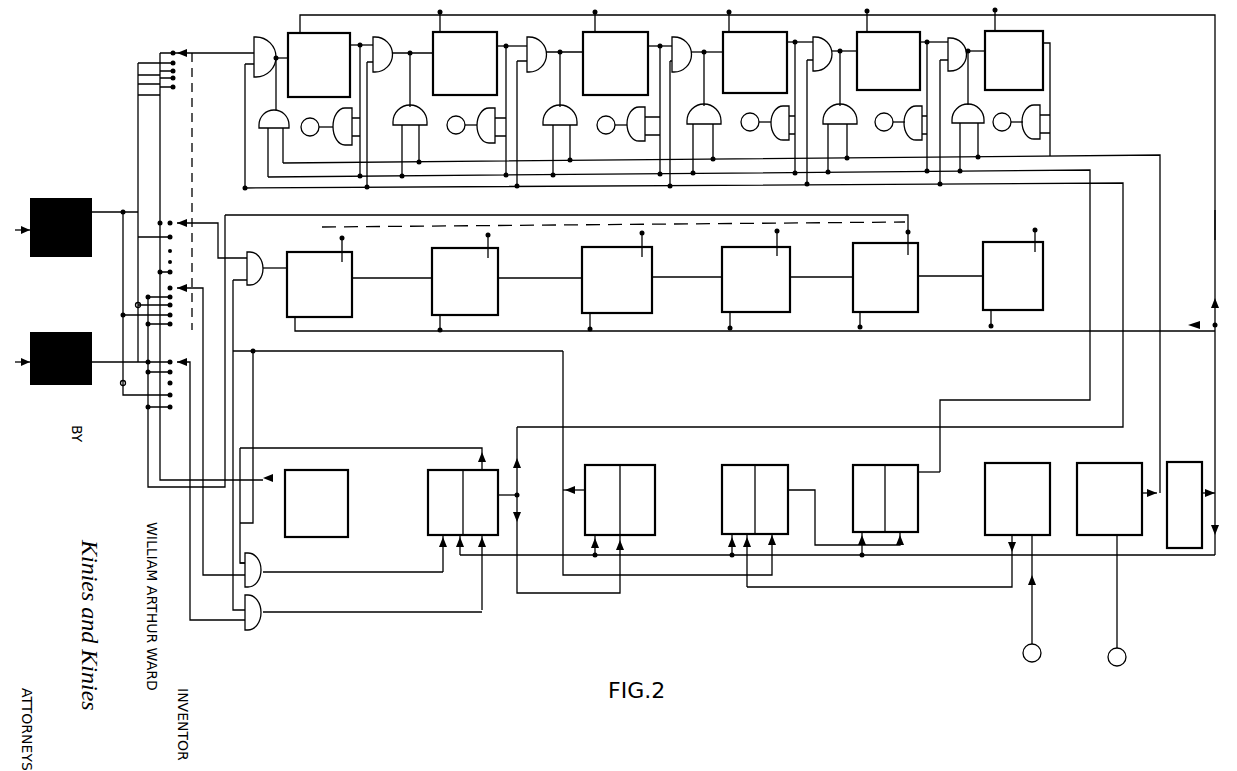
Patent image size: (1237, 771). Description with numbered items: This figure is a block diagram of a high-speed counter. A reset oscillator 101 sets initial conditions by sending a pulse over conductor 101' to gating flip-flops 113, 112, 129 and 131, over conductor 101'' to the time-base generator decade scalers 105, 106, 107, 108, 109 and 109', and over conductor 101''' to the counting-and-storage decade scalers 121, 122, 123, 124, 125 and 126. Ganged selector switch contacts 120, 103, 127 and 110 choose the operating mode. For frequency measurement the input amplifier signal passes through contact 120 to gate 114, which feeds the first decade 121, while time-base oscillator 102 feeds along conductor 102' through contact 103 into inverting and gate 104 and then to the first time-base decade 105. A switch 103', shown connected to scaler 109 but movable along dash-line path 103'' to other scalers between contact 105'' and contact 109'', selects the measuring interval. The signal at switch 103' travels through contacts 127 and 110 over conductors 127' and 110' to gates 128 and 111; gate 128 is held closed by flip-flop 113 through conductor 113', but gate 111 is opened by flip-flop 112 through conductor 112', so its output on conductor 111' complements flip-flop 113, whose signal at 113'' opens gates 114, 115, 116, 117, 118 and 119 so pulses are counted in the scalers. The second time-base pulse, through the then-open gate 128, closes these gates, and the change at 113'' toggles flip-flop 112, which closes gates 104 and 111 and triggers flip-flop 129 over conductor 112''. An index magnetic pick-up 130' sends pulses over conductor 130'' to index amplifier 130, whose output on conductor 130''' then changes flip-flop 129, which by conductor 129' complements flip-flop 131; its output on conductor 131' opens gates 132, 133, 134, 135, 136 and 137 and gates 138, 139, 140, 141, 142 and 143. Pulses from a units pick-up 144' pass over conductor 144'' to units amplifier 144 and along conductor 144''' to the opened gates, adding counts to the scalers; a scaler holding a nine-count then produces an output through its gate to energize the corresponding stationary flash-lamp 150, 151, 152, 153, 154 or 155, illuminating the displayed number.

The switch contact 120 is at (208, 50).
The inverting and gate 114 is at (262, 42).
The inverting and gate 115 is at (389, 44).
The inverting and gate 116 is at (533, 44).
The inverting and gate 117 is at (684, 44).
The inverting and gate 118 is at (826, 43).
The inverting and gate 119 is at (956, 43).
The counting-and-storage decade scaler 121 is at (330, 106).
The counting-and-storage decade scaler 122 is at (480, 105).
The counting-and-storage decade scaler 123 is at (627, 104).
The counting-and-storage decade scaler 124 is at (768, 104).
The counting-and-storage decade scaler 125 is at (902, 103).
The counting-and-storage decade scaler 126 is at (1017, 93).
The gate 132 is at (256, 118).
The gate 133 is at (406, 112).
The gate 134 is at (556, 112).
The gate 135 is at (698, 111).
The gate 136 is at (834, 111).
The gate 137 is at (968, 110).
The gate 138 is at (340, 133).
The gate 139 is at (488, 132).
The gate 140 is at (640, 132).
The gate 141 is at (775, 131).
The gate 142 is at (902, 131).
The gate 143 is at (1030, 131).
The stationary flash-lamp 150 is at (320, 112).
The stationary flash-lamp 151 is at (466, 114).
The stationary flash-lamp 152 is at (614, 114).
The stationary flash-lamp 153 is at (758, 114).
The stationary flash-lamp 154 is at (893, 113).
The stationary flash-lamp 155 is at (1010, 110).
The flip-flop output signal 113'' is at (478, 322).
The dash-line path 103'' is at (672, 201).
The conductor 101''' is at (1191, 224).
The conductor 101'' is at (1191, 313).
The switch contact 103 is at (524, 342).
The switch 103' is at (928, 237).
The inverting and gate 104 is at (398, 421).
The time-base generator decade scaler 105 is at (751, 291).
The contact 105'' is at (365, 247).
The time-base generator decade scaler 106 is at (507, 283).
The time-base generator decade scaler 107 is at (652, 281).
The time-base generator decade scaler 108 is at (787, 280).
The time-base generator decade scaler 109 is at (918, 286).
The time-base generator decade scaler 109' is at (1013, 285).
The contact 109'' is at (1059, 239).
The switch contact 127 is at (183, 421).
The conductor 127' is at (220, 530).
The switch contact 110 is at (196, 480).
The conductor 110' is at (208, 633).
The time-base oscillator 102 is at (316, 503).
The conductor 102' is at (176, 466).
The gating flip-flop 112 is at (609, 500).
The conductor 112' is at (572, 463).
The conductor 112'' is at (689, 595).
The gating flip-flop 113 is at (803, 518).
The conductor 113' is at (363, 457).
The gating flip-flop 129 is at (755, 514).
The conductor 129' is at (846, 506).
The gating flip-flop 131 is at (896, 500).
The conductor 131' is at (1062, 373).
The index amplifier 130 is at (898, 541).
The index magnetic pick-up 130' is at (1054, 661).
The conductor 130'' is at (1056, 619).
The conductor 130''' is at (853, 604).
The units amplifier 144 is at (1117, 543).
The units pick-up member 144' is at (1139, 663).
The conductor 144'' is at (1139, 619).
The conductor 144''' is at (1168, 378).
The reset oscillator 101 is at (1192, 492).
The conductor 101' is at (1199, 578).
The gate 128 is at (268, 582).
The inverting and gate 111 is at (363, 618).
The conductor 111' is at (452, 625).